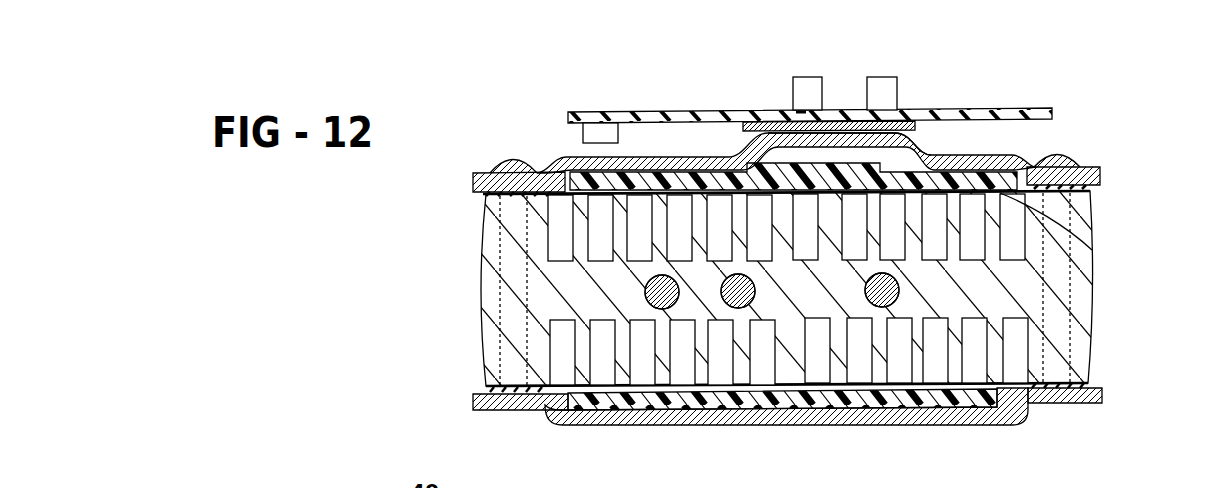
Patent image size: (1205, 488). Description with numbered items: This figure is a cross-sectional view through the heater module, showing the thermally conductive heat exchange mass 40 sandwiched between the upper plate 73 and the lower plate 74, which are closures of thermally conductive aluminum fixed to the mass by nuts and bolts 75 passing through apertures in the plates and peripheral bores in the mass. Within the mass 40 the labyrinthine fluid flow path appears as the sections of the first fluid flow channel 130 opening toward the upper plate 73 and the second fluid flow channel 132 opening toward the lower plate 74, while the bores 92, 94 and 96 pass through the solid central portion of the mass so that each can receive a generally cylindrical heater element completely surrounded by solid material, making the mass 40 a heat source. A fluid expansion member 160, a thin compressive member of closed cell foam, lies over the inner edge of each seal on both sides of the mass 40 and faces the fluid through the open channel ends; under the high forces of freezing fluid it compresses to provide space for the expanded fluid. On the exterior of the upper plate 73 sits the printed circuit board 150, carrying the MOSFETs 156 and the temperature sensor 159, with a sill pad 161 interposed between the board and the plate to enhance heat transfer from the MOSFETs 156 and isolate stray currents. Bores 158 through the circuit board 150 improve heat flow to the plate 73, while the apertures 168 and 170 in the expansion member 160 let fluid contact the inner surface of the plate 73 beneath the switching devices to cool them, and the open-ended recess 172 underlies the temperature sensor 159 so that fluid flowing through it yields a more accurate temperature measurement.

The heat exchange mass 40 is at (594, 97).
The upper plate 73 is at (1100, 172).
The lower plate 74 is at (1102, 400).
The nuts and bolts 75 is at (1056, 155).
The bore 92 is at (886, 308).
The bore 94 is at (741, 309).
The bore 96 is at (662, 310).
The first fluid flow channel 130 is at (556, 226).
The second fluid flow channel 132 is at (553, 348).
The printed circuit board 150 is at (1052, 108).
The MOSFETs 156 is at (817, 78).
The bores 158 is at (800, 116).
The temperature sensor 159 is at (582, 133).
The fluid expansion member 160 is at (1088, 249).
The sill pad 161 is at (743, 123).
The aperture 168 is at (915, 153).
The aperture 170 is at (752, 111).
The open-ended recess 172 is at (618, 150).